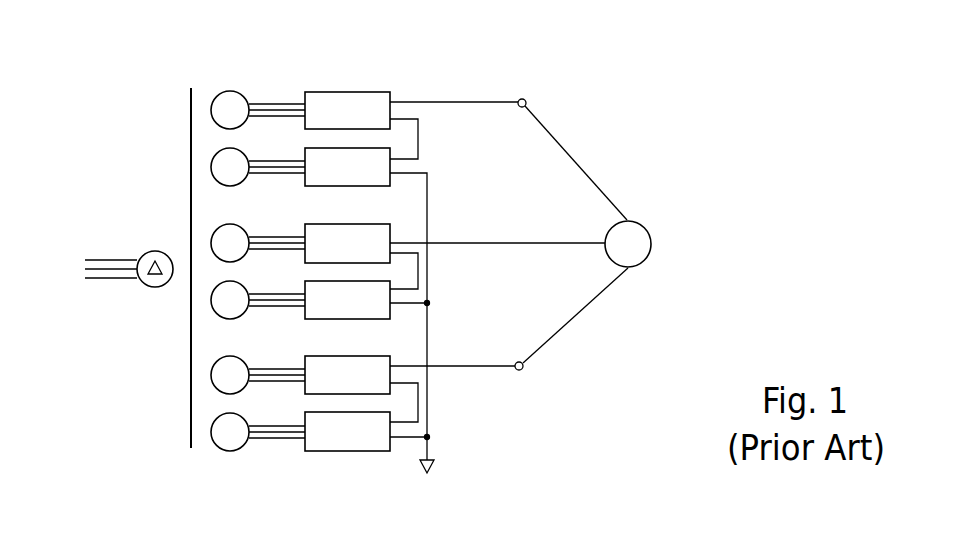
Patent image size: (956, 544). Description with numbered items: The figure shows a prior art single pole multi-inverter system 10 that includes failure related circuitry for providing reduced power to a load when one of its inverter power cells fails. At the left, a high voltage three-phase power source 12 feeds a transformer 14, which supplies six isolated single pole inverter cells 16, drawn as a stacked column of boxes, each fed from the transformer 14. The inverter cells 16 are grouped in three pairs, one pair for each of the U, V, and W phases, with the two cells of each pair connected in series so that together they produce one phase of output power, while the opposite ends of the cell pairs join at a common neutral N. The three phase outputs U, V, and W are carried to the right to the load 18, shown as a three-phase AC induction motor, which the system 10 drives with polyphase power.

The single pole multi-inverter system 10 is at (600, 130).
The high voltage three-phase power source 12 is at (139, 262).
The transformer 14 is at (185, 483).
The isolated single pole inverter cells 16 is at (350, 85).
The load 18 is at (640, 243).